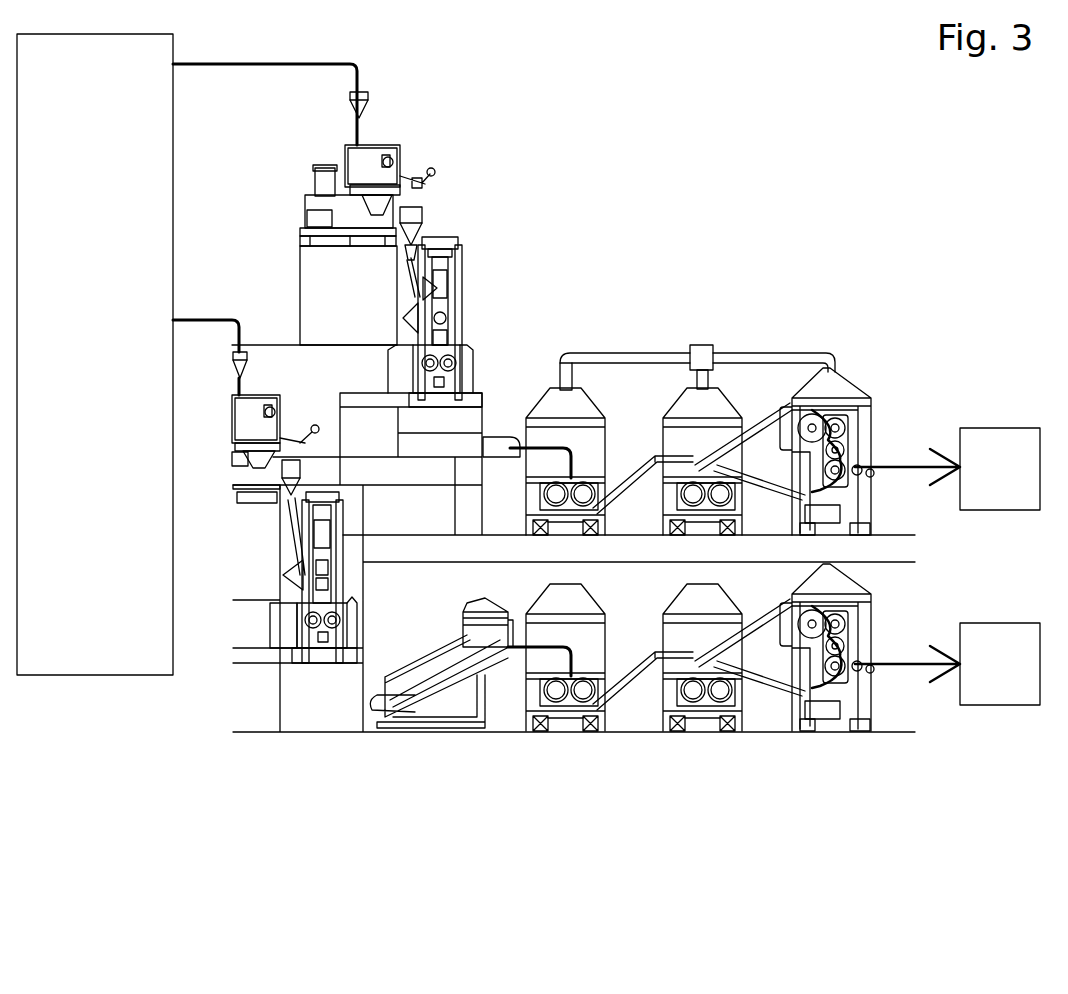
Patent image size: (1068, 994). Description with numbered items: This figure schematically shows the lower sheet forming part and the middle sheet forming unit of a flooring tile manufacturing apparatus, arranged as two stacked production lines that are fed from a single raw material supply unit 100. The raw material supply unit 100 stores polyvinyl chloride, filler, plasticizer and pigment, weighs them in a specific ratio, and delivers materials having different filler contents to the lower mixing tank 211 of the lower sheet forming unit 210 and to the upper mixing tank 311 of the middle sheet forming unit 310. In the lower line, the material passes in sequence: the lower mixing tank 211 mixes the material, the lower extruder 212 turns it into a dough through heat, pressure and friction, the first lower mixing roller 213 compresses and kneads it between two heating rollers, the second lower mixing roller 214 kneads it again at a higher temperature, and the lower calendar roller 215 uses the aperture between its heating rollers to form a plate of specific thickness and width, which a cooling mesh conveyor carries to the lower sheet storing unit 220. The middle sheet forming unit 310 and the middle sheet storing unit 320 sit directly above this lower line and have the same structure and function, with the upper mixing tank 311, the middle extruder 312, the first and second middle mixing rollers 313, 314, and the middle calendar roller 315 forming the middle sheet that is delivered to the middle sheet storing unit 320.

The raw material supply unit 100 is at (95, 354).
The middle sheet forming unit 310 is at (553, 84).
The upper mixing tank 311 is at (447, 150).
The middle extruder 312 is at (470, 225).
The first middle mixing roller 313 is at (597, 335).
The second middle mixing roller 314 is at (727, 335).
The middle calendar roller 315 is at (873, 347).
The middle sheet storing unit 320 is at (1000, 469).
The lower sheet forming unit 210 is at (860, 845).
The lower mixing tank 211 is at (216, 512).
The lower extruder 212 is at (315, 748).
The first lower mixing roller 213 is at (568, 748).
The second lower mixing roller 214 is at (703, 746).
The lower calendar roller 215 is at (855, 746).
The lower sheet storing unit 220 is at (1000, 664).